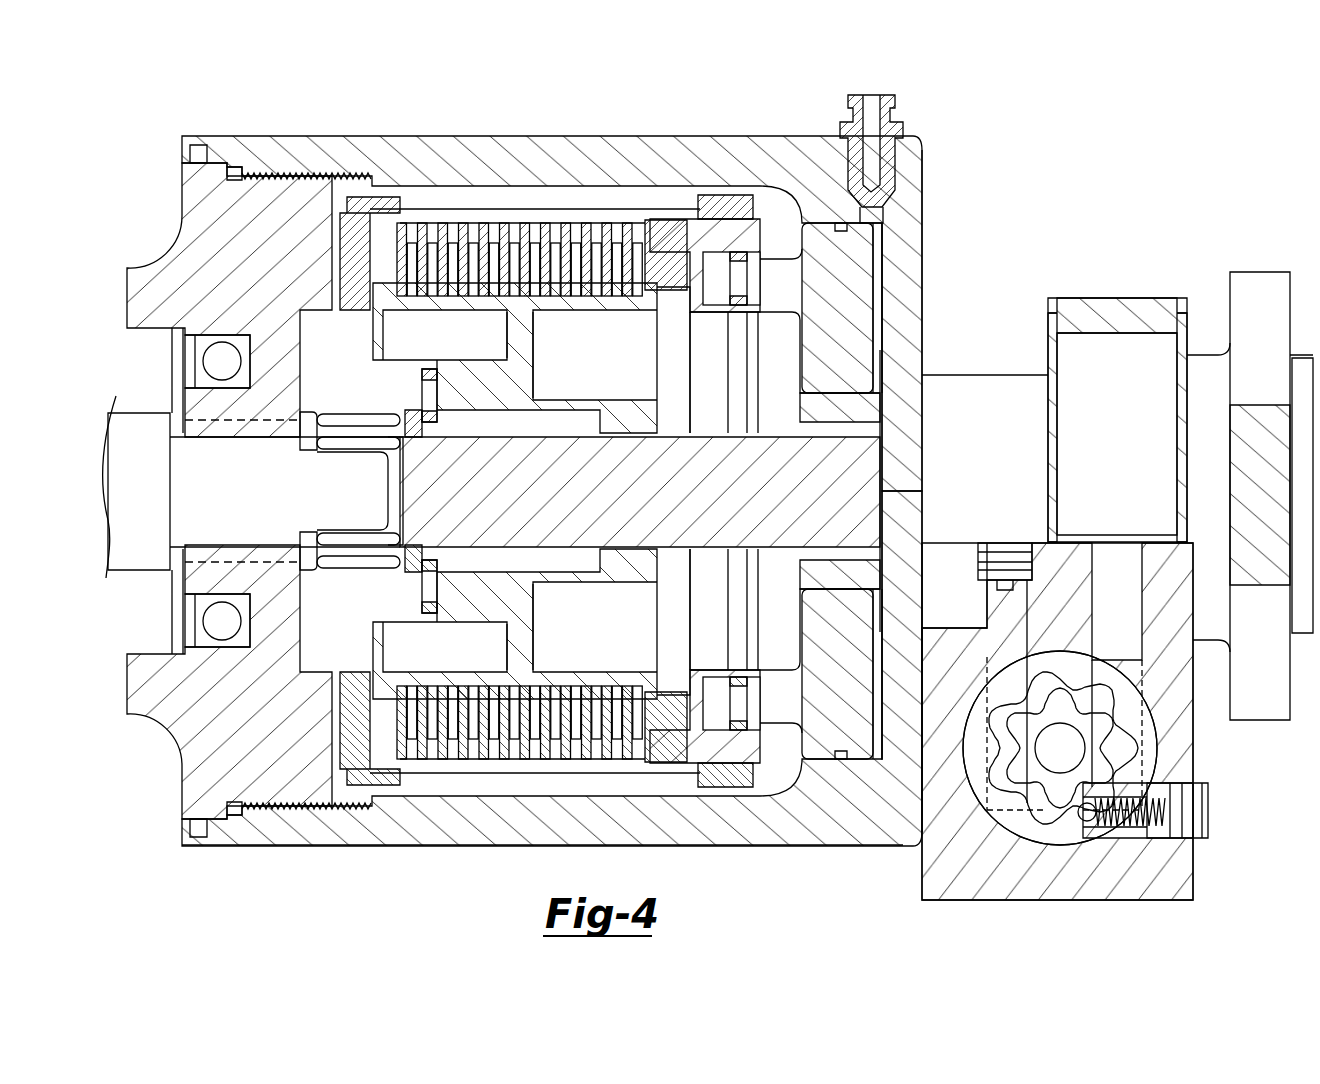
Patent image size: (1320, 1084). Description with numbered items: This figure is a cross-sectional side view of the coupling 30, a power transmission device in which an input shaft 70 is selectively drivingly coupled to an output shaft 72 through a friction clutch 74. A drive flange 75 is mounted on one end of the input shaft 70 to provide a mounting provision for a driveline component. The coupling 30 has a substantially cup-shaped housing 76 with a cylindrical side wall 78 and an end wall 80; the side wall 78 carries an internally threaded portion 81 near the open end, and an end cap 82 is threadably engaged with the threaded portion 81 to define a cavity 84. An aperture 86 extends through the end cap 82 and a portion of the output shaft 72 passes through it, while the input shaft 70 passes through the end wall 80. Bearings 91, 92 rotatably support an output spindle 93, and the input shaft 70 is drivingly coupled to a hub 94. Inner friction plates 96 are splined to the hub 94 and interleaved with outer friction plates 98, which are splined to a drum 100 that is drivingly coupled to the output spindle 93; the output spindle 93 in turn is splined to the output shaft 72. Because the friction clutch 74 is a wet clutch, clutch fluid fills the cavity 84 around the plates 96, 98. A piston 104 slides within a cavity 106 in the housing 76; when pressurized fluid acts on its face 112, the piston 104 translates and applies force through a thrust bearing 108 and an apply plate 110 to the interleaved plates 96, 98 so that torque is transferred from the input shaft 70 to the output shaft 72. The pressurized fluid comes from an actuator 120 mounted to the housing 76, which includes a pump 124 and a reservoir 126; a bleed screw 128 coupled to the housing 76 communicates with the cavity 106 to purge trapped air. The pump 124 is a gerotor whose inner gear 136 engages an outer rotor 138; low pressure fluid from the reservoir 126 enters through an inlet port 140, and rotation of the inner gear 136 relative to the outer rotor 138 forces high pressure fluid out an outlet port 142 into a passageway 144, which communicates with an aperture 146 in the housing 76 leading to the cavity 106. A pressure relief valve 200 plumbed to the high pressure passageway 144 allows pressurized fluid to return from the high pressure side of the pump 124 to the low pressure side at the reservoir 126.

The coupling 30 is at (693, 129).
The input shaft 70 is at (875, 462).
The output shaft 72 is at (113, 425).
The friction clutch 74 is at (462, 200).
The drive flange 75 is at (1263, 720).
The housing 76 is at (788, 842).
The side wall 78 is at (437, 846).
The end wall 80 is at (917, 294).
The threaded portion 81 is at (270, 802).
The end cap 82 is at (200, 222).
The cavity 84 is at (580, 205).
The aperture 86 is at (152, 330).
The bearing 91 is at (205, 600).
The bearing 92 is at (372, 568).
The output spindle 93 is at (362, 338).
The hub 94 is at (527, 363).
The inner friction plates 96 is at (640, 287).
The outer friction plates 98 is at (630, 223).
The drum 100 is at (520, 213).
The piston 104 is at (807, 680).
The cavity 106 is at (880, 258).
The thrust bearing 108 is at (742, 725).
The apply plate 110 is at (680, 715).
The face 112 is at (870, 618).
The actuator 120 is at (1220, 878).
The pump 124 is at (1195, 612).
The reservoir 126 is at (1052, 360).
The bleed screw 128 is at (896, 108).
The inner gear 136 is at (1005, 762).
The outer rotor 138 is at (1013, 678).
The inlet port 140 is at (1095, 700).
The outlet port 142 is at (1047, 800).
The passageway 144 is at (955, 590).
The aperture 146 is at (873, 620).
The pressure relief valve 200 is at (1140, 830).